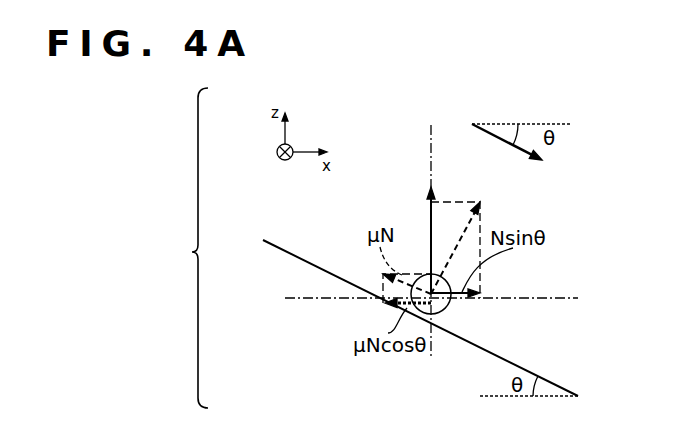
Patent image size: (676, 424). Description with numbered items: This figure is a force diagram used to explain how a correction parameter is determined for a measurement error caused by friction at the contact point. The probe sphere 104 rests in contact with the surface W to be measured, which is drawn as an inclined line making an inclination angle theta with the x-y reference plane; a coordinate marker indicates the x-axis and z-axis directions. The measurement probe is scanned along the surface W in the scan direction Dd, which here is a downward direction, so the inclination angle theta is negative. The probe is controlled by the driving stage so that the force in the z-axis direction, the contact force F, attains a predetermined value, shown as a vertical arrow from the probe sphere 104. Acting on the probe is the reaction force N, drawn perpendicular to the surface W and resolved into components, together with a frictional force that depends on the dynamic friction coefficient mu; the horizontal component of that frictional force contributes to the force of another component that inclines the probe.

The probe sphere 104 is at (450, 307).
The surface to be measured W is at (420, 312).
The contact force F is at (421, 237).
The reaction force N is at (464, 238).
The scan direction Dd is at (507, 128).